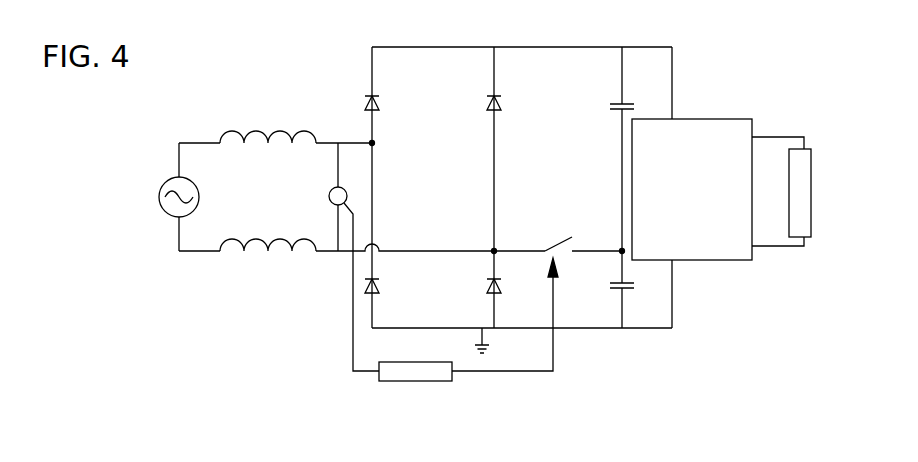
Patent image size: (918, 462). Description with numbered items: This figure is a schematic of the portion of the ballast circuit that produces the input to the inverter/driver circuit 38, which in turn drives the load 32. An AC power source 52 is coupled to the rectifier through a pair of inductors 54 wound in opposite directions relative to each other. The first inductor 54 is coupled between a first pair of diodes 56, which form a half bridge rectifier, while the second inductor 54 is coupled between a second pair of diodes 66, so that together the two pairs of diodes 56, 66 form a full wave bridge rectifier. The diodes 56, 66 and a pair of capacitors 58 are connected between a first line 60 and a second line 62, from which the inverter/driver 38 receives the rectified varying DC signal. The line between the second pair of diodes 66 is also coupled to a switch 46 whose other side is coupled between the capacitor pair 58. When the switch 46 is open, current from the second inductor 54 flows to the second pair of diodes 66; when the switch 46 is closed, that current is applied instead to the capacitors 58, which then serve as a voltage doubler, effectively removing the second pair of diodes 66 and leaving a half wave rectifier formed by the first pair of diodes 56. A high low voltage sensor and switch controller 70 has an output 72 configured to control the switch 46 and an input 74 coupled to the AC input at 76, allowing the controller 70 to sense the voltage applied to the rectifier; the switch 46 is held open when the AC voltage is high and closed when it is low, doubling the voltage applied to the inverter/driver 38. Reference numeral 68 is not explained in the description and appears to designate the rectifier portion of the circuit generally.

The load 32 is at (815, 157).
The inverter/driver circuit 38 is at (690, 118).
The switch 46 is at (550, 243).
The AC power source 52 is at (165, 214).
The inductors 54 is at (290, 135).
The first pair of diodes 56 is at (387, 112).
The capacitors 58 is at (607, 100).
The first line 60 is at (528, 47).
The second line 62 is at (580, 328).
The second pair of diodes 66 is at (485, 93).
The rectifier bridge 68 is at (323, 90).
The high low voltage sensor and switch controller 70 is at (425, 362).
The output 72 is at (492, 372).
The input 74 is at (355, 324).
The AC input 76 is at (342, 260).